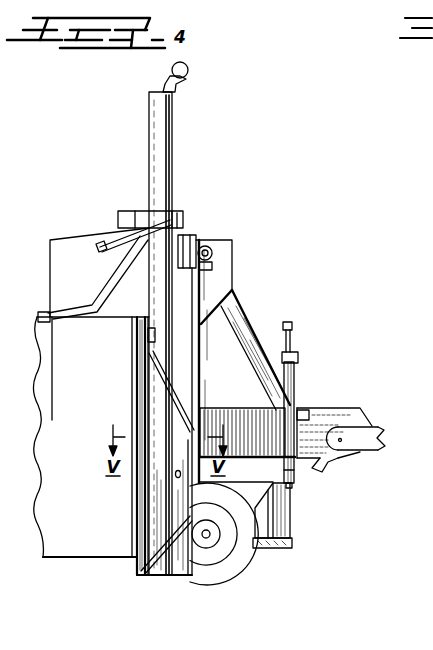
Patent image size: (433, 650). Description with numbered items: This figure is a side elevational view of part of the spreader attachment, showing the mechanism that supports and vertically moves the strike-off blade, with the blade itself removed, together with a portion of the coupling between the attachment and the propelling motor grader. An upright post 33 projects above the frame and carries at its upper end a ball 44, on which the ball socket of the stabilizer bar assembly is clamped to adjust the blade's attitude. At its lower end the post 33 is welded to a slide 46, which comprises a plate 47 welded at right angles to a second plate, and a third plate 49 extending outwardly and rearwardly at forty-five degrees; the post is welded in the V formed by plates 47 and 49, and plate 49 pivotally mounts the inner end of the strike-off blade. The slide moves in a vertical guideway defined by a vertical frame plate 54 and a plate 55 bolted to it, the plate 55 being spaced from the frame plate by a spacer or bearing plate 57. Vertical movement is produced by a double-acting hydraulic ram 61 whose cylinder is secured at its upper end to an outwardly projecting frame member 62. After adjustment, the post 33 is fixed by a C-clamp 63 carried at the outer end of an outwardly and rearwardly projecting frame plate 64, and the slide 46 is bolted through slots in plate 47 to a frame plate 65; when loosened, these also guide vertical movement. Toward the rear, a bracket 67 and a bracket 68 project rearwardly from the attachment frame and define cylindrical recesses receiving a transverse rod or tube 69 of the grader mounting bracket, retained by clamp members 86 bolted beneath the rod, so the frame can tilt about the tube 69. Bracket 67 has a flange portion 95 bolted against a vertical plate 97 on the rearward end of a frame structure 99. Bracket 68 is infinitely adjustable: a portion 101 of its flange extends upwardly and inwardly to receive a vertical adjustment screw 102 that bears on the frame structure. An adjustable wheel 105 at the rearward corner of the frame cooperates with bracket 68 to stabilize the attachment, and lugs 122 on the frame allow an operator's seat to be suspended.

The upright post 33 is at (172, 148).
The ball 44 is at (189, 70).
The slide 46 is at (165, 578).
The plate 47 is at (178, 560).
The third plate 49 is at (135, 549).
The vertical frame plate 54 is at (136, 486).
The plate 55 is at (148, 501).
The spacer or bearing plate 57 is at (146, 533).
The double-acting hydraulic ram 61 is at (205, 297).
The outwardly projecting frame member 62 is at (194, 238).
The C-clamp 63 is at (184, 216).
The frame plate 64 is at (70, 240).
The frame plate 65 is at (108, 242).
The bracket 67 is at (318, 408).
The bracket 68 is at (378, 456).
The transversely extending rod or tube 69 is at (344, 436).
The clamp member 86 is at (341, 452).
The flange portion 95 is at (296, 460).
The vertical plate 97 is at (292, 484).
The frame structure 99 is at (252, 318).
The portion of flange 101 is at (298, 357).
The vertical adjustment screw 102 is at (292, 325).
The adjustable wheel 105 is at (251, 558).
The lugs 122 is at (212, 252).